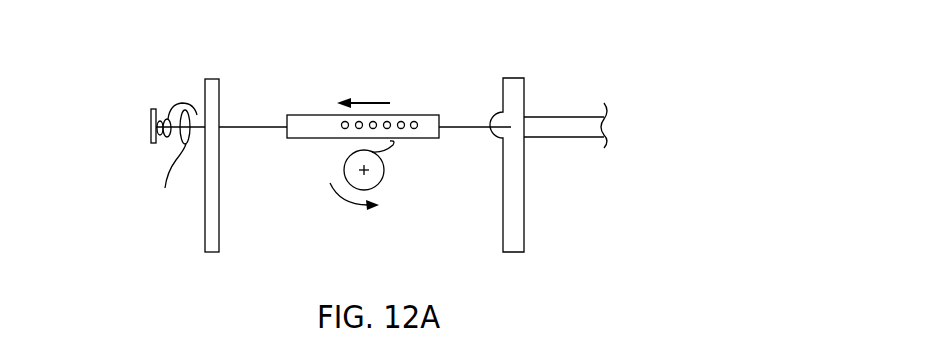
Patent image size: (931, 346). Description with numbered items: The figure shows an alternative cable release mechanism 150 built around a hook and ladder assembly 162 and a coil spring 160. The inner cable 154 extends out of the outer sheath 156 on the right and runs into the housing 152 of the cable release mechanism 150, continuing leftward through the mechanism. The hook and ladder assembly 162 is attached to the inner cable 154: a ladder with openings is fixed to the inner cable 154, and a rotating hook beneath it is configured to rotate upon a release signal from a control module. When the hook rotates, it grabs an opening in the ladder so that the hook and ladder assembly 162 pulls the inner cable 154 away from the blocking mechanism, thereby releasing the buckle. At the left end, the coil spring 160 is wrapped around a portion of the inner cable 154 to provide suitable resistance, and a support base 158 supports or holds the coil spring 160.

The cable release mechanism 150 is at (154, 33).
The housing 152 is at (520, 218).
The inner cable 154 is at (250, 123).
The outer sheath 156 is at (554, 125).
The support base 158 is at (150, 113).
The coil spring 160 is at (173, 158).
The hook and ladder assembly 162 is at (418, 56).